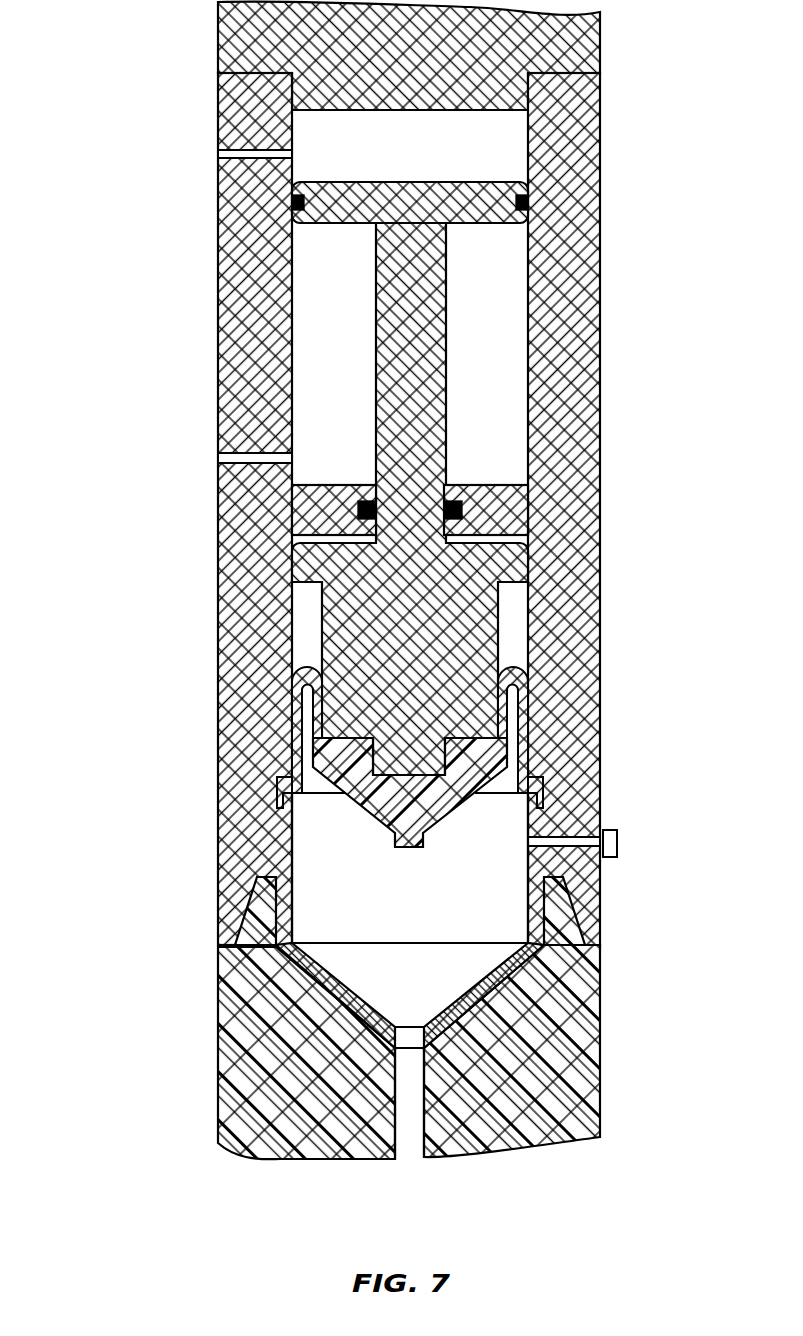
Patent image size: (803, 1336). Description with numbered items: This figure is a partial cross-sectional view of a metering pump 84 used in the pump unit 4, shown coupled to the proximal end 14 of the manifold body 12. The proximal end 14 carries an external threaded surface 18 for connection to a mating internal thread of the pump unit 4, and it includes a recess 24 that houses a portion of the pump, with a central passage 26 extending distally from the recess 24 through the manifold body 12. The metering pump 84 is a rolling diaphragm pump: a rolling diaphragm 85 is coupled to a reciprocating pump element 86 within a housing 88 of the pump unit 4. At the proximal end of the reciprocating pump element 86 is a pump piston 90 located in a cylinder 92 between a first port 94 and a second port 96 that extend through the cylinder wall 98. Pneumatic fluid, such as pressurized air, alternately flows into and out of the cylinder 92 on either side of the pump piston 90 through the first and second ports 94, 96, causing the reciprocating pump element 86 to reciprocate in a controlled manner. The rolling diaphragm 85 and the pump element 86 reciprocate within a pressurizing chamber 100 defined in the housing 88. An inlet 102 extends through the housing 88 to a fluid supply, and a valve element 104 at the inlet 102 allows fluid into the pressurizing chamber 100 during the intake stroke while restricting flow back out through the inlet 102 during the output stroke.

The pump unit 4 is at (617, 215).
The manifold body 12 is at (585, 1075).
The proximal end 14 is at (258, 868).
The external threaded surface 18 is at (243, 905).
The recess 24 is at (480, 1000).
The central passage 26 is at (405, 1112).
The metering pump 84 is at (170, 685).
The rolling diaphragm 85 is at (517, 673).
The reciprocating pump element 86 is at (480, 615).
The housing 88 is at (588, 380).
The pump piston 90 is at (492, 183).
The cylinder 92 is at (315, 336).
The first port 94 is at (222, 458).
The second port 96 is at (222, 154).
The cylinder wall 98 is at (232, 240).
The pressurizing chamber 100 is at (362, 922).
The inlet 102 is at (573, 840).
The valve element 104 is at (617, 841).